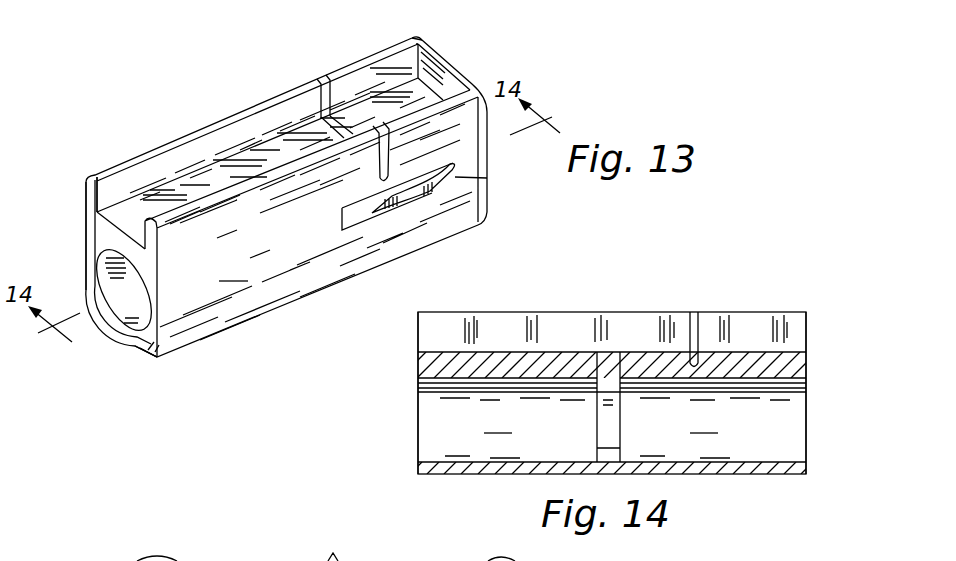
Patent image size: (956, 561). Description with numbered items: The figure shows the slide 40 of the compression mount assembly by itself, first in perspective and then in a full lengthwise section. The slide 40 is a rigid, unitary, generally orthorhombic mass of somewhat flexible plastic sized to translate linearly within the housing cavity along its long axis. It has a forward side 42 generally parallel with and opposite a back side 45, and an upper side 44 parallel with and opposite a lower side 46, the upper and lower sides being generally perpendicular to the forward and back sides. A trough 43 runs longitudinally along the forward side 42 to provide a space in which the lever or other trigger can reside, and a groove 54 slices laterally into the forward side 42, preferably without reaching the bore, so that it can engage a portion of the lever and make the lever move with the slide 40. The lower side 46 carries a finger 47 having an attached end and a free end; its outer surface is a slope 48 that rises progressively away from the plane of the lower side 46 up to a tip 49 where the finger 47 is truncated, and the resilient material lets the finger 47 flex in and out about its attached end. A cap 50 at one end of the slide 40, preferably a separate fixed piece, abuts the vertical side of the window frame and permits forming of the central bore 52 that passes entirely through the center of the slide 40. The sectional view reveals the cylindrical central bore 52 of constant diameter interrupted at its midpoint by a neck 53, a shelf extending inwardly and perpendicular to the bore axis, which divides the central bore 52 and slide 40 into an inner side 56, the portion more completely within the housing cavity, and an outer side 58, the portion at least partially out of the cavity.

In FIG. 13, the slide 40 is at (285, 197).
In FIG. 14, the slide 40 is at (617, 358).
In FIG. 13, the forward side 42 is at (250, 110).
In FIG. 14, the forward side 42 is at (546, 312).
In FIG. 13, the trough 43 is at (185, 193).
In FIG. 14, the trough 43 is at (474, 352).
In FIG. 13, the upper side 44 is at (84, 194).
In FIG. 13, the back side 45 is at (133, 343).
In FIG. 14, the back side 45 is at (488, 476).
In FIG. 13, the lower side 46 is at (311, 223).
In FIG. 13, the finger 47 is at (370, 210).
In FIG. 13, the slope 48 is at (425, 196).
In FIG. 13, the tip 49 is at (487, 178).
In FIG. 13, the cap 50 is at (452, 63).
In FIG. 13, the central bore 52 is at (108, 266).
In FIG. 14, the central bore 52 is at (615, 428).
In FIG. 13, the neck 53 is at (353, 128).
In FIG. 14, the neck 53 is at (612, 378).
In FIG. 14, the groove 54 is at (697, 328).
In FIG. 13, the inner side 56 is at (153, 342).
In FIG. 14, the inner side 56 is at (418, 356).
In FIG. 13, the outer side 58 is at (424, 56).
In FIG. 14, the outer side 58 is at (806, 360).